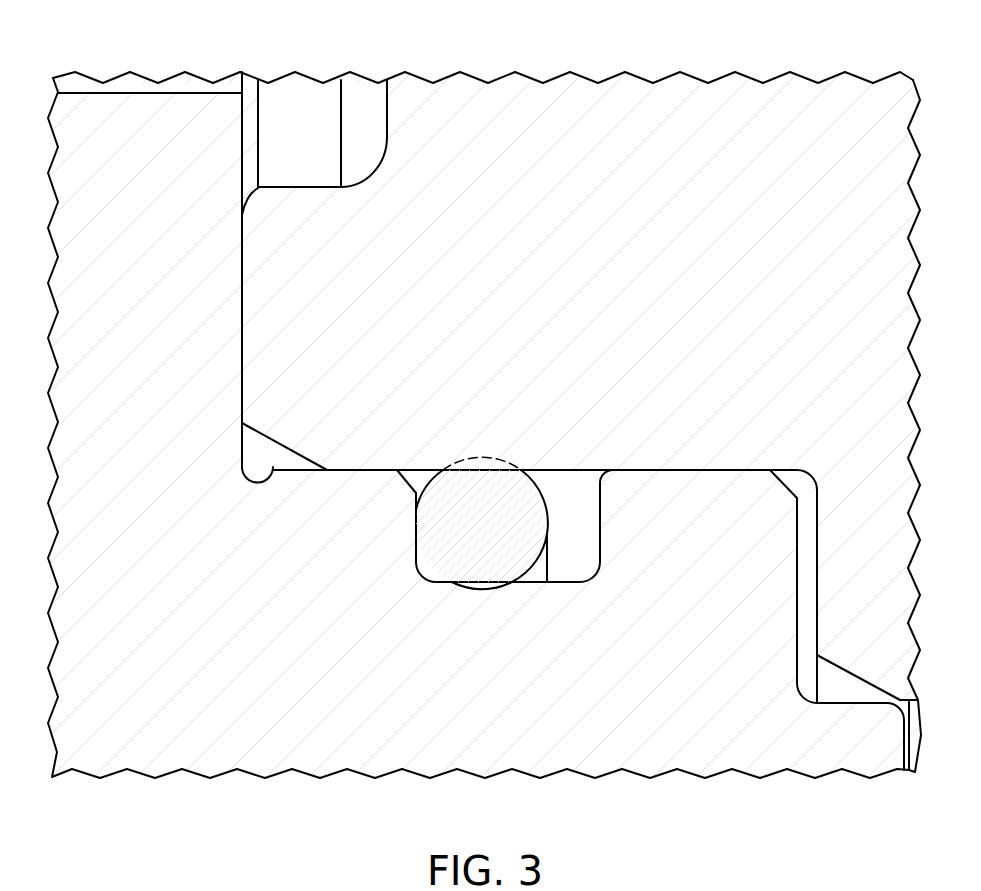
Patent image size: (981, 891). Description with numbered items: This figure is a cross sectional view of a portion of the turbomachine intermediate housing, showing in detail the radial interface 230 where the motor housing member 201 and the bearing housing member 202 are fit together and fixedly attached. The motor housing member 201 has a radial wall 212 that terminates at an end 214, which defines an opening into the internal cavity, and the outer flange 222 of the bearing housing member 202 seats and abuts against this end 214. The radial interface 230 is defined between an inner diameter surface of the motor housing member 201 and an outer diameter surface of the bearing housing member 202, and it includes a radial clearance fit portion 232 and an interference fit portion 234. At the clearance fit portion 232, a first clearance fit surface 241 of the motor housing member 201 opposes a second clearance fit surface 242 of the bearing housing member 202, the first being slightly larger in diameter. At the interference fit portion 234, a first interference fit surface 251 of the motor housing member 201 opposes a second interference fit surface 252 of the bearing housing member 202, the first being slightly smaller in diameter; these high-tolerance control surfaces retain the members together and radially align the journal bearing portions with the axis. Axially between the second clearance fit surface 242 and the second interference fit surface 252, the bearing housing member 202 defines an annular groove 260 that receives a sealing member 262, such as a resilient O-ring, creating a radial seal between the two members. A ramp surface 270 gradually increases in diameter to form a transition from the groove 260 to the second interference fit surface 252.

The motor housing member 201 is at (603, 111).
The bearing housing member 202 is at (82, 128).
The radial wall 212 is at (743, 92).
The end 214 is at (242, 245).
The outer flange 222 is at (140, 103).
The radial interface 230 is at (797, 380).
The radial clearance fit portion 232 is at (613, 467).
The interference fit portion 234 is at (398, 466).
The first clearance fit surface 241 is at (737, 472).
The second clearance fit surface 242 is at (763, 467).
The first interference fit surface 251 is at (338, 472).
The second interference fit surface 252 is at (327, 468).
The annular groove 260 is at (576, 569).
The sealing member 262 is at (485, 483).
The ramp surface 270 is at (418, 464).